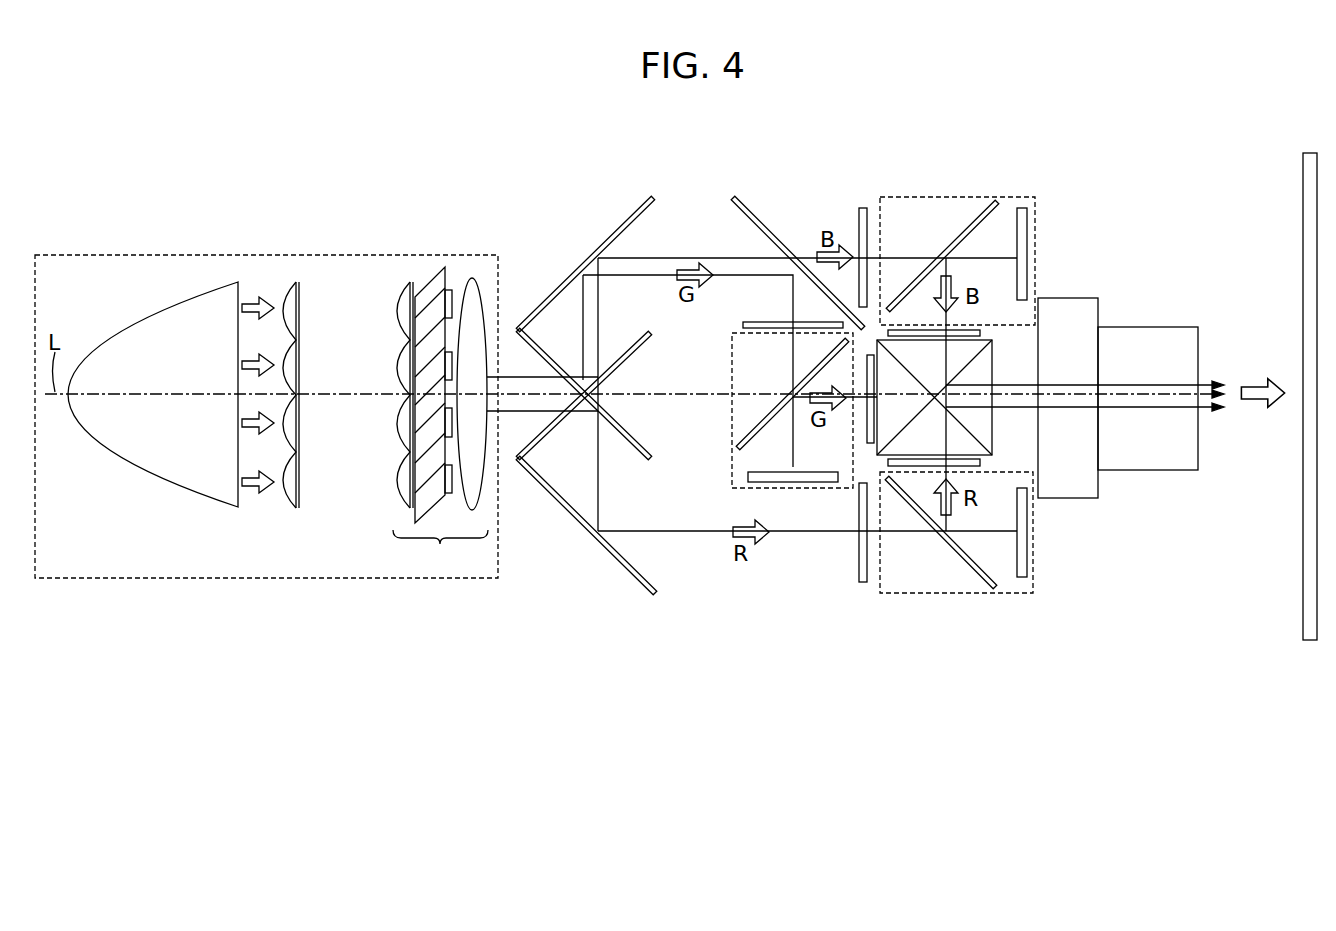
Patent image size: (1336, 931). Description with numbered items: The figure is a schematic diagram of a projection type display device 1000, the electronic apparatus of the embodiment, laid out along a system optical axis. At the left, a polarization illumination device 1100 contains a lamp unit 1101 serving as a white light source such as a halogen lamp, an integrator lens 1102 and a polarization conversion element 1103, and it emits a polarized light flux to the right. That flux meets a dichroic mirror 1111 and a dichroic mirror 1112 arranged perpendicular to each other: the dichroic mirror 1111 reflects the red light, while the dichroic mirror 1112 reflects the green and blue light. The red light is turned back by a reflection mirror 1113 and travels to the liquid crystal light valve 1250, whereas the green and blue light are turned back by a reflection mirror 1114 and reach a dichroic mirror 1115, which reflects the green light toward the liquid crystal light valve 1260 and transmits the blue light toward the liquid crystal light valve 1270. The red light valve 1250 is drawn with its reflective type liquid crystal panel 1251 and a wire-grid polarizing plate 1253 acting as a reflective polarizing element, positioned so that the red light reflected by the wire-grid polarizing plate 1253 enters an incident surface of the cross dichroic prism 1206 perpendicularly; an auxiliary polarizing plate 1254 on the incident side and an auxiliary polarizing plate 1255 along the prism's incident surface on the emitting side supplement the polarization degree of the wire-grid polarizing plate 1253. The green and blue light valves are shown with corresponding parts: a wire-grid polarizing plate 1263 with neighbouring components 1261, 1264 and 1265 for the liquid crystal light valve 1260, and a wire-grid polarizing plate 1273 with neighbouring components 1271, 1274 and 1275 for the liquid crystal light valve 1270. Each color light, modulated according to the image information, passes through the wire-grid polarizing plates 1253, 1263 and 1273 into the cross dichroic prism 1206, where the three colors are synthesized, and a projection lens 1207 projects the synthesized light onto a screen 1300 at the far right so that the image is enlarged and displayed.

The projection type display device 1000 is at (1165, 158).
The polarization illumination device 1100 is at (277, 252).
The lamp unit 1101 is at (155, 474).
The integrator lens 1102 is at (297, 512).
The polarization conversion element 1103 is at (440, 419).
The dichroic mirror 1111 is at (638, 438).
The dichroic mirror 1112 is at (638, 350).
The reflection mirror 1113 is at (581, 524).
The reflection mirror 1114 is at (628, 212).
The dichroic mirror 1115 is at (760, 212).
The liquid crystal light valve 1260 is at (732, 347).
The field lens 1261 is at (733, 482).
The wire-grid polarizing plate 1263 is at (762, 418).
The field lens 1264 is at (765, 322).
The green liquid crystal light valve 1265 is at (863, 420).
The liquid crystal light valve 1270 is at (912, 197).
The blue liquid crystal light valve 1271 is at (1030, 262).
The wire-grid polarizing plate 1273 is at (968, 220).
The field lens 1274 is at (857, 220).
The field lens 1275 is at (982, 333).
The cross dichroic prism 1206 is at (993, 372).
The projection lens 1207 is at (1188, 345).
The liquid crystal light valve 1250 is at (902, 594).
The reflective type liquid crystal panel 1251 is at (1030, 529).
The wire-grid polarizing plate 1253 is at (967, 562).
The auxiliary polarizing plate 1254 is at (859, 572).
The auxiliary polarizing plate 1255 is at (982, 464).
The screen 1300 is at (1303, 565).